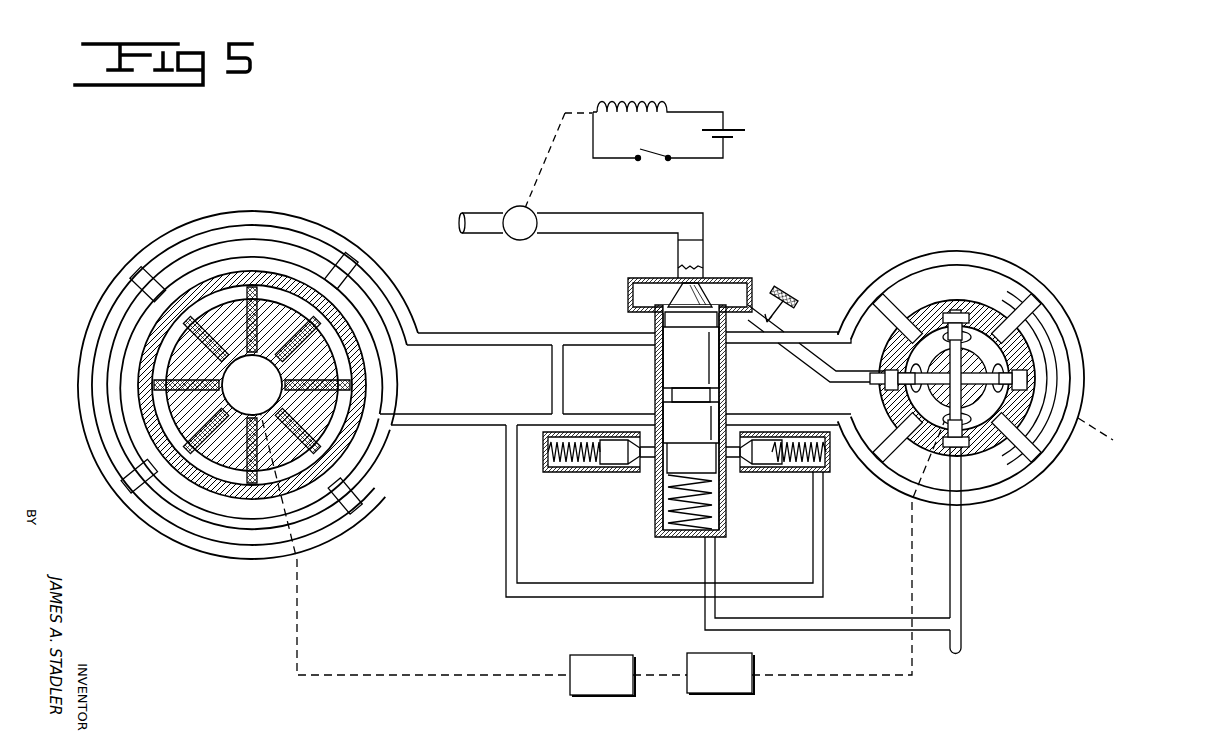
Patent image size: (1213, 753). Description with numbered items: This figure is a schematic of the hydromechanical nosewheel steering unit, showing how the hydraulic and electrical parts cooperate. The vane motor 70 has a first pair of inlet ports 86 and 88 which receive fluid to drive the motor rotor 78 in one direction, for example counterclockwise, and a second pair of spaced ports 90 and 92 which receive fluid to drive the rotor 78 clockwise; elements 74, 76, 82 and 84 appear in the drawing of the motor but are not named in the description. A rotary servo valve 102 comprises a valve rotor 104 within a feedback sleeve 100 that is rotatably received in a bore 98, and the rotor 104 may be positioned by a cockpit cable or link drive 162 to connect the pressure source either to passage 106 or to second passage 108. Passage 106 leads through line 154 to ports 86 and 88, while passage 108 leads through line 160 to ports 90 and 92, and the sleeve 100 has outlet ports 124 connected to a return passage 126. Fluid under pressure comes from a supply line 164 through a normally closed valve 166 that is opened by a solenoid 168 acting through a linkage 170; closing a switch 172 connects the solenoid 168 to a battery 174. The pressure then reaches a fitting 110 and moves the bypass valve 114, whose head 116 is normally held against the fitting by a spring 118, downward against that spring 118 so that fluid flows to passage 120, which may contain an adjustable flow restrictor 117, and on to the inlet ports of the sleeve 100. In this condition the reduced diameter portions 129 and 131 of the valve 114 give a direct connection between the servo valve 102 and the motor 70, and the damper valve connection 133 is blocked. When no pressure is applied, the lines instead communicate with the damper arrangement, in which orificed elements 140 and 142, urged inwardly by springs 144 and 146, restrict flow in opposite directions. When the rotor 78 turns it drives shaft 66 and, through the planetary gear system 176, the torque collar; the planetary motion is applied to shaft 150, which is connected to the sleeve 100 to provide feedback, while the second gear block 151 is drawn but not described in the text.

The shaft 66 is at (316, 680).
The vane motor 70 is at (240, 245).
The rotor 74 is at (367, 384).
The pump housing 76 is at (283, 278).
The motor rotor 78 is at (232, 478).
The vanes 82 is at (352, 368).
The shaft bore 84 is at (236, 402).
The inlet port 86 is at (324, 290).
The inlet port 88 is at (160, 462).
The port 90 is at (193, 227).
The port 92 is at (338, 512).
The bore 98 is at (973, 376).
The feedback sleeve 100 is at (985, 460).
The rotary servo valve 102 is at (981, 249).
The valve rotor 104 is at (1060, 332).
The passage 106 is at (1076, 352).
The second passage 108 is at (1084, 374).
The fitting 110 is at (680, 272).
The bypass valve 114 is at (666, 428).
The head 116 is at (712, 292).
The adjustable flow restrictor 117 is at (778, 290).
The spring 118 is at (730, 460).
The passage 120 is at (805, 358).
The outlet ports 124 is at (940, 312).
The return passage 126 is at (953, 648).
The reduced diameter portion 129 is at (660, 348).
The reduced diameter portion 131 is at (722, 392).
The damper valve connection 133 is at (670, 455).
The orificed element 140 is at (600, 470).
The orificed element 142 is at (800, 472).
The spring 144 is at (556, 472).
The spring 146 is at (832, 455).
The shaft 150 is at (848, 678).
The planetary gear 151 is at (716, 694).
The line 154 is at (470, 414).
The line 160 is at (500, 334).
The link drive 162 is at (1112, 432).
The supply line 164 is at (470, 212).
The normally closed valve 166 is at (514, 238).
The solenoid 168 is at (650, 110).
The linkage 170 is at (557, 117).
The switch 172 is at (660, 160).
The battery 174 is at (744, 133).
The planetary gear system 176 is at (569, 662).